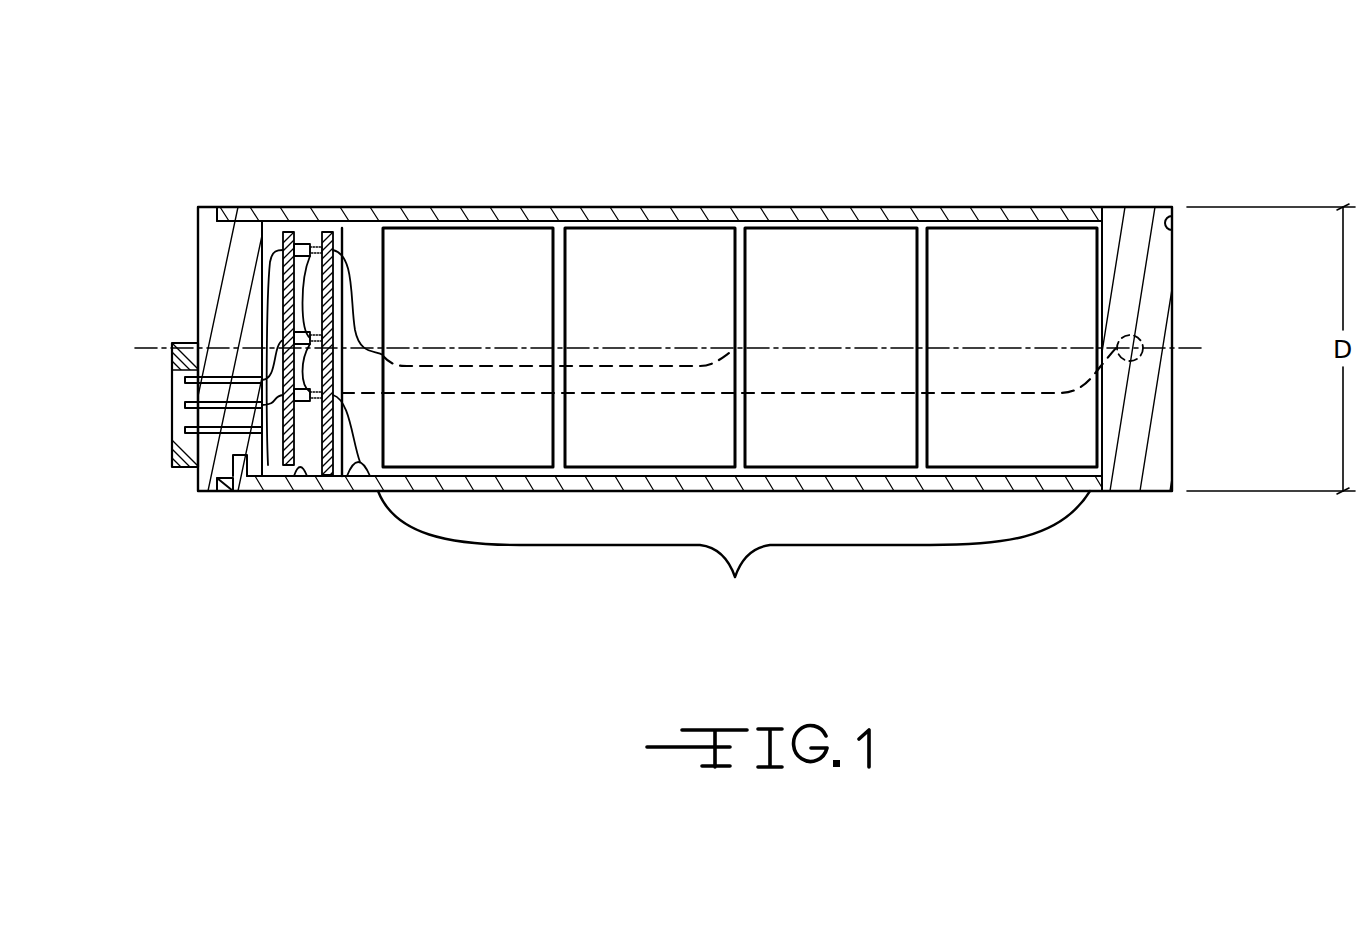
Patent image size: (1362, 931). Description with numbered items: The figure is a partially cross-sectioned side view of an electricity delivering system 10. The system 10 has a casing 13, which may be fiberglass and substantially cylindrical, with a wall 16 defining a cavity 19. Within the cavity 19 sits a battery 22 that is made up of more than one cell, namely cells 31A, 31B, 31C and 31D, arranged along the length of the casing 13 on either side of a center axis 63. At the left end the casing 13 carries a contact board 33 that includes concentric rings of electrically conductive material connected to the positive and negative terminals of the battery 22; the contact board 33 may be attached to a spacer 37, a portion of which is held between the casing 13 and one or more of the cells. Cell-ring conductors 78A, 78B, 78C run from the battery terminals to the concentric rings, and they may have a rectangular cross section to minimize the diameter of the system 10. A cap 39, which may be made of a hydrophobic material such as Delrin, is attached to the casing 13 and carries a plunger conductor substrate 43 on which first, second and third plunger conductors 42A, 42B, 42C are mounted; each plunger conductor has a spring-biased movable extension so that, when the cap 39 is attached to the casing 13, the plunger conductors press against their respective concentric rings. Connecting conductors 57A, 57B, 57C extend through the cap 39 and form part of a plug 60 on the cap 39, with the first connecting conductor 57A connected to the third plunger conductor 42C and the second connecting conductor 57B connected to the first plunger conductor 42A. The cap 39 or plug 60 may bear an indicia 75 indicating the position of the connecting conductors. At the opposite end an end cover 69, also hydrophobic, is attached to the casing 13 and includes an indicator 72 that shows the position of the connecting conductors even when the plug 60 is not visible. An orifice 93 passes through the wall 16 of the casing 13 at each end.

The electricity delivering system 10 is at (765, 106).
The casing 13 is at (898, 195).
The wall 16 is at (1000, 212).
The cavity 19 is at (326, 522).
The battery 22 is at (734, 551).
The first cell 31A is at (526, 449).
The second cell 31B is at (648, 279).
The third cell 31C is at (836, 301).
The fourth cell 31D is at (1022, 322).
The contact board 33 is at (303, 240).
The spacer 37 is at (380, 493).
The cap 39 is at (208, 278).
The first plunger conductor 42A is at (338, 243).
The second plunger conductor 42B is at (342, 402).
The third plunger conductor 42C is at (312, 246).
The plunger conductor substrate 43 is at (300, 478).
The first connecting conductor 57A is at (172, 386).
The second connecting conductor 57B is at (172, 404).
The connecting conductor 57C is at (172, 426).
The plug 60 is at (160, 453).
The center axis 63 is at (147, 349).
The end cover 69 is at (1172, 457).
The indicator 72 is at (1172, 225).
The indicia 75 is at (172, 347).
The cell-ring conductor 78A is at (375, 302).
The cell-ring conductor 78B is at (442, 360).
The cell-ring conductor 78C is at (785, 397).
The orifice 93 is at (1118, 337).